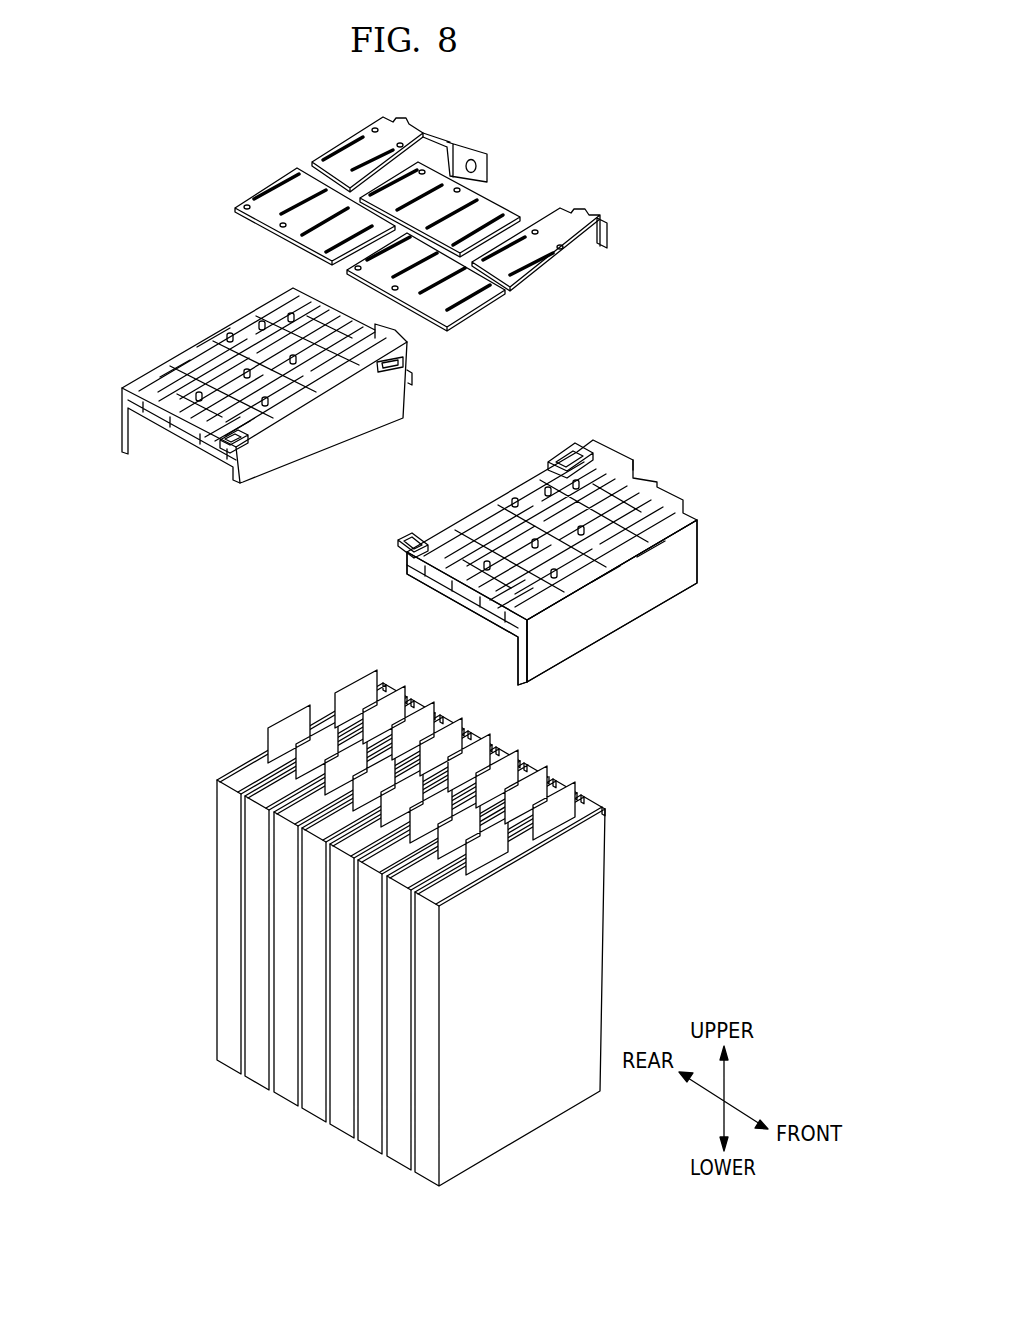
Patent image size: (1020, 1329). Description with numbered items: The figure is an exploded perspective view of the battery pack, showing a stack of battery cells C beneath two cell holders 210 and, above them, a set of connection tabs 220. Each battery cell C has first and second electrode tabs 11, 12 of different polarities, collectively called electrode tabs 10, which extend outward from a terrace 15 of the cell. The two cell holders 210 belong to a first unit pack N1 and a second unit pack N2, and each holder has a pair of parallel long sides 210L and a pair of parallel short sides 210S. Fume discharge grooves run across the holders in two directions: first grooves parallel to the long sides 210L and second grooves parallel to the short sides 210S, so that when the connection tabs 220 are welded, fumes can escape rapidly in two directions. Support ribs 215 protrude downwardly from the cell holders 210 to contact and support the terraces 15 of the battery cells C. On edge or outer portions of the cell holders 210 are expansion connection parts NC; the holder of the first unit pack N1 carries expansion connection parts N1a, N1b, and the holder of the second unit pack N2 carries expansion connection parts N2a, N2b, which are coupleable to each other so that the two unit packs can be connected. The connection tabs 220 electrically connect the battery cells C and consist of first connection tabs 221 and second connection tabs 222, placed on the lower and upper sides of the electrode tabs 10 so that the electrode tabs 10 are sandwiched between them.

The electrode tab 10 is at (305, 600).
The first electrode tab 11 is at (275, 724).
The second electrode tab 12 is at (353, 678).
The terrace 15 is at (588, 811).
The battery cell C is at (591, 918).
The cell holder 210 is at (408, 407).
The short side 210S is at (412, 577).
The long side 210L is at (643, 557).
The support rib 215 is at (333, 423).
The connection tab 220 is at (680, 214).
The first connection tab 221 is at (572, 255).
The second connection tab 222 is at (597, 228).
The first unit pack N1 is at (683, 458).
The second unit pack N2 is at (142, 483).
The expansion connection part N1a is at (563, 452).
The expansion connection part N1b is at (410, 542).
The expansion connection part N2a is at (404, 361).
The expansion connection part N2b is at (243, 455).
The expansion connection part NC is at (567, 388).